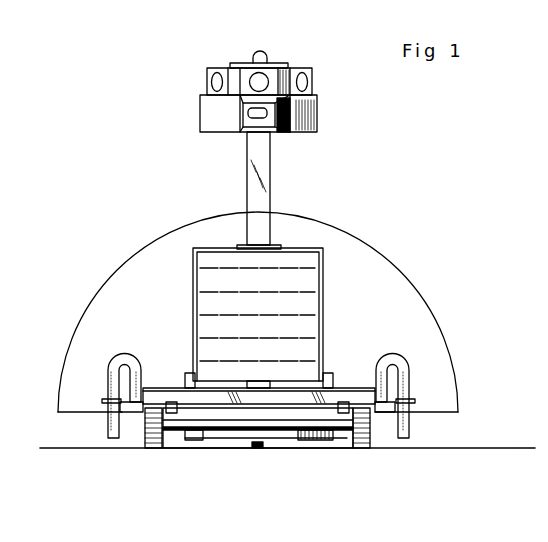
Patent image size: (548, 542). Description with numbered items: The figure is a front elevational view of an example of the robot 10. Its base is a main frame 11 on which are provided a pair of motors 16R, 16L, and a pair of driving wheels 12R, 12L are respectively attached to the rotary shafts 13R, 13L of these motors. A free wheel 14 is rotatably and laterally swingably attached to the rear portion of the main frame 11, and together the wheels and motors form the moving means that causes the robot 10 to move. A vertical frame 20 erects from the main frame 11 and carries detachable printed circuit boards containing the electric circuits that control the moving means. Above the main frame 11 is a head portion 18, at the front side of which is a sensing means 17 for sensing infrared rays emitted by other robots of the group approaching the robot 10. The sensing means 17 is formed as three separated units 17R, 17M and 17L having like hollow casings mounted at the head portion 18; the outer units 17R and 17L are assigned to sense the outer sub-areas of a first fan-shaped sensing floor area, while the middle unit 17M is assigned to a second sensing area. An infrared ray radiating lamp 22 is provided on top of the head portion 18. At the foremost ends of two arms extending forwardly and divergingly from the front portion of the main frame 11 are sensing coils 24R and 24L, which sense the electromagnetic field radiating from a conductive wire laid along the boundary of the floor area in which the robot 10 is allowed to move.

The robot 10 is at (146, 228).
The main frame 11 is at (338, 396).
The driving wheel 12R is at (150, 450).
The driving wheel 12L is at (360, 450).
The rotary shaft 13R is at (148, 424).
The rotary shaft 13L is at (373, 422).
The free wheel 14 is at (258, 448).
The motor 16R is at (199, 442).
The motor 16L is at (313, 442).
The sensing means 17 is at (201, 88).
The sensing unit 17R is at (206, 80).
The sensing unit 17M is at (261, 81).
The sensing unit 17L is at (308, 82).
The head portion 18 is at (317, 118).
The vertical frame 20 is at (328, 265).
The infrared ray radiating lamp 22 is at (255, 56).
The sensing coil 24R is at (107, 423).
The sensing coil 24L is at (410, 425).